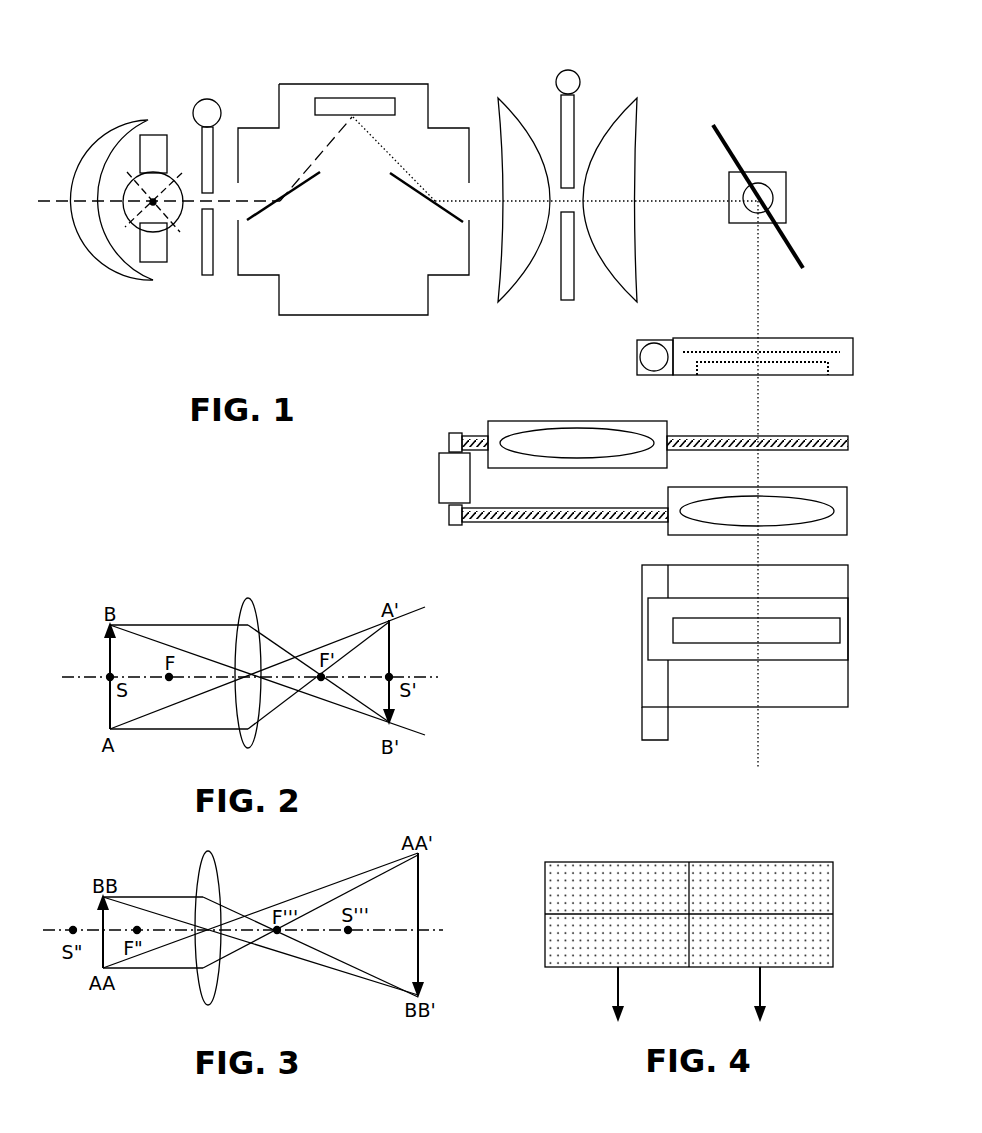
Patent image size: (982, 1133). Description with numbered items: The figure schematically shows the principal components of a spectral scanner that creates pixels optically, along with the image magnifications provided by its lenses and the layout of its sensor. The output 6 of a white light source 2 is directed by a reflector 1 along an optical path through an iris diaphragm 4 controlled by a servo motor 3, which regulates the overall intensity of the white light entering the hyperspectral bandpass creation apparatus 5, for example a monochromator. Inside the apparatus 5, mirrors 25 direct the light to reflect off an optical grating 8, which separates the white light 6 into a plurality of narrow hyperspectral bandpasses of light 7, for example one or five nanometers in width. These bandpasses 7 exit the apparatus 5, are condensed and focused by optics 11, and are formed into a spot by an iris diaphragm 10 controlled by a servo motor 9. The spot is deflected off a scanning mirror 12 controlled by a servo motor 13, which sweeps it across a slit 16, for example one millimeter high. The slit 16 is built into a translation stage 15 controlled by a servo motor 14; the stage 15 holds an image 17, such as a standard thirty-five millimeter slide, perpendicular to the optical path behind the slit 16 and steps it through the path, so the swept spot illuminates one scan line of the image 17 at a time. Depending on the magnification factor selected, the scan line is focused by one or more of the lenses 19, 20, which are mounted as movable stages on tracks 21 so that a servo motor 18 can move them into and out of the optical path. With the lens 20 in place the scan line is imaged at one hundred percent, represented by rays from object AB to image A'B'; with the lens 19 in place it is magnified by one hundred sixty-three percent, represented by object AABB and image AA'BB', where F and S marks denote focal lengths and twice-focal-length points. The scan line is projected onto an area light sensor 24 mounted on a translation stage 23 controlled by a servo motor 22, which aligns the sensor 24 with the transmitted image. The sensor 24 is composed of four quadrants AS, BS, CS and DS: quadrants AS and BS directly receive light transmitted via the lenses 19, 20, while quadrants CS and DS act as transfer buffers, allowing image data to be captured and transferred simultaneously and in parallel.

In FIG. 1, the reflector 1 is at (108, 125).
In FIG. 1, the white light source 2 is at (158, 125).
In FIG. 1, the servo motor 3 is at (207, 98).
In FIG. 1, the iris diaphragm 4 is at (207, 285).
In FIG. 1, the hyperspectral bandpass creation apparatus 5 is at (292, 84).
In FIG. 1, the output of white light source 6 is at (192, 203).
In FIG. 1, the hyperspectral bandpasses of light 7 is at (483, 193).
In FIG. 1, the optical grating 8 is at (365, 98).
In FIG. 1, the servo motor 9 is at (566, 69).
In FIG. 1, the iris diaphragm 10 is at (580, 135).
In FIG. 1, the optics 11 is at (607, 292).
In FIG. 1, the scanning mirror 12 is at (735, 145).
In FIG. 1, the servo motor 13 is at (790, 193).
In FIG. 1, the servo motor 14 is at (654, 362).
In FIG. 1, the translation stage 15 is at (707, 338).
In FIG. 1, the slit 16 is at (802, 352).
In FIG. 1, the image 17 is at (832, 372).
In FIG. 2, the image 17 is at (102, 653).
In FIG. 3, the image 17 is at (98, 927).
In FIG. 1, the servo motor 18 is at (435, 487).
In FIG. 1, the lens 19 is at (517, 433).
In FIG. 3, the lens 19 is at (222, 900).
In FIG. 1, the lens 20 is at (687, 520).
In FIG. 2, the lens 20 is at (248, 597).
In FIG. 1, the tracks 21 is at (745, 452).
In FIG. 1, the servo motor 22 is at (637, 723).
In FIG. 1, the translation stage 23 is at (712, 650).
In FIG. 1, the area light sensor 24 is at (670, 628).
In FIG. 2, the area light sensor 24 is at (397, 653).
In FIG. 3, the area light sensor 24 is at (423, 917).
In FIG. 4, the area light sensor 24 is at (757, 860).
In FIG. 1, the mirrors 25 is at (408, 185).